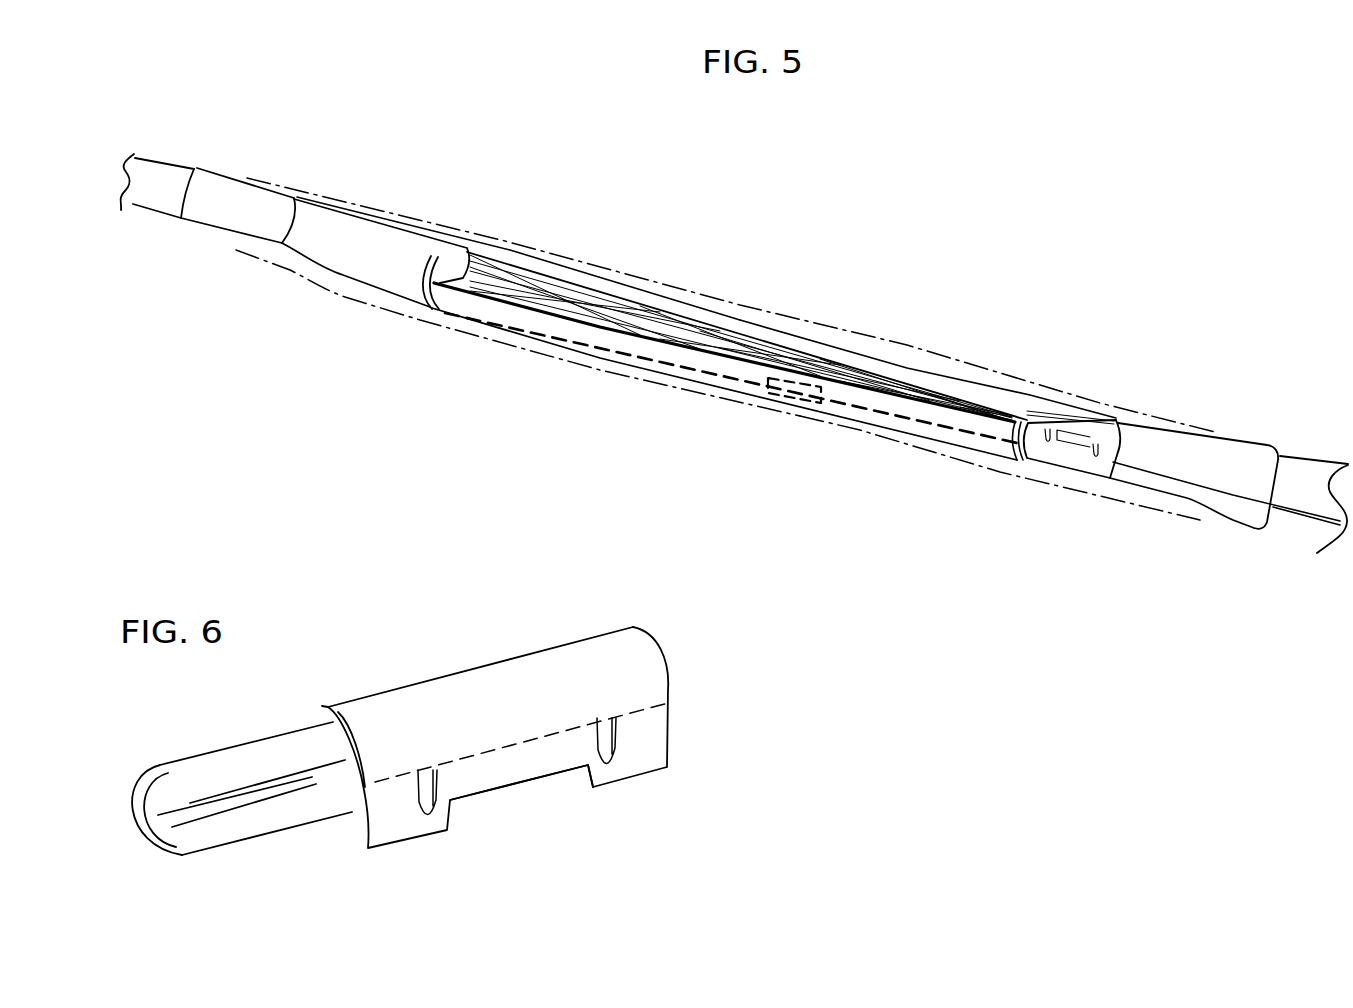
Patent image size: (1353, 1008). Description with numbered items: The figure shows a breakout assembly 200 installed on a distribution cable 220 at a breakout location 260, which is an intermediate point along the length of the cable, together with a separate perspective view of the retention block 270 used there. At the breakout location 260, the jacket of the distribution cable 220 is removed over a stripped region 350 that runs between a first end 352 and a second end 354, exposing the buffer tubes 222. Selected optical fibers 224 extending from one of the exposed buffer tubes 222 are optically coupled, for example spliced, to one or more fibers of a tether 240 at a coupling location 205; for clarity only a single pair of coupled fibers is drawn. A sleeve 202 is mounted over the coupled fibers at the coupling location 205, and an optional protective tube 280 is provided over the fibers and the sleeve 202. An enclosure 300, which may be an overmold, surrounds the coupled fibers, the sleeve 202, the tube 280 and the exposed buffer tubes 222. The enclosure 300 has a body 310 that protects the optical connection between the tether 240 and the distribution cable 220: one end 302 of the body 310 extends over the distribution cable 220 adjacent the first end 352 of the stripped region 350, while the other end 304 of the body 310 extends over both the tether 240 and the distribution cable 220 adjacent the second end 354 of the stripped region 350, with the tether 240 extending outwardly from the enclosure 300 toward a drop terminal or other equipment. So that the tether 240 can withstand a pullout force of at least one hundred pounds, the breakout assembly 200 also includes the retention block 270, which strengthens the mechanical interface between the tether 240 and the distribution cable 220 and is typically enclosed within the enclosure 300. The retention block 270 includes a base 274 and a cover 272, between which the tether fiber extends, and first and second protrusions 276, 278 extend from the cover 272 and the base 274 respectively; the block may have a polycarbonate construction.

In FIG. 5, the breakout assembly 200 is at (905, 260).
In FIG. 5, the sleeve 202 is at (805, 378).
In FIG. 5, the coupling location 205 is at (748, 423).
In FIG. 5, the distribution cable 220 is at (158, 172).
In FIG. 5, the buffer tubes 222 is at (558, 285).
In FIG. 5, the optical fibers 224 is at (620, 346).
In FIG. 5, the tether 240 is at (1295, 525).
In FIG. 5, the breakout location 260 is at (980, 507).
In FIG. 5, the retention block 270 is at (1066, 452).
In FIG. 6, the retention block 270 is at (552, 600).
In FIG. 6, the cover 272 is at (470, 737).
In FIG. 6, the base 274 is at (490, 772).
In FIG. 6, the first protrusion 276 is at (202, 767).
In FIG. 6, the second protrusion 278 is at (207, 852).
In FIG. 5, the protective tube 280 is at (492, 330).
In FIG. 5, the enclosure 300 is at (233, 247).
In FIG. 5, the one end of the body 302 is at (182, 225).
In FIG. 5, the other end of the body 304 is at (1243, 533).
In FIG. 5, the body 310 is at (330, 283).
In FIG. 5, the stripped region 350 is at (786, 265).
In FIG. 5, the first end of the stripped region 352 is at (318, 193).
In FIG. 5, the second end of the stripped region 354 is at (1113, 412).